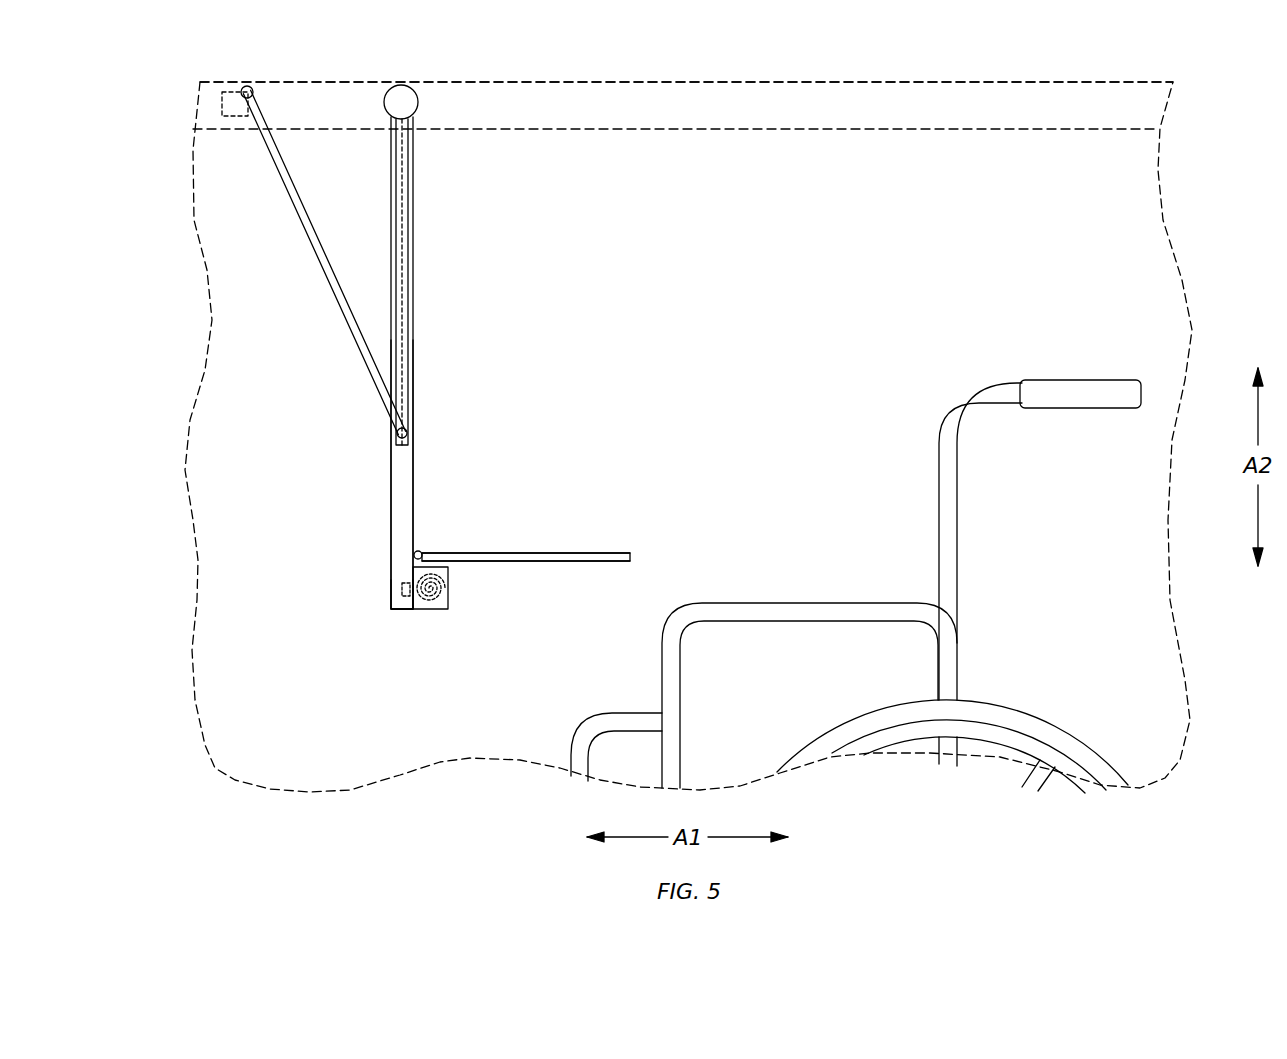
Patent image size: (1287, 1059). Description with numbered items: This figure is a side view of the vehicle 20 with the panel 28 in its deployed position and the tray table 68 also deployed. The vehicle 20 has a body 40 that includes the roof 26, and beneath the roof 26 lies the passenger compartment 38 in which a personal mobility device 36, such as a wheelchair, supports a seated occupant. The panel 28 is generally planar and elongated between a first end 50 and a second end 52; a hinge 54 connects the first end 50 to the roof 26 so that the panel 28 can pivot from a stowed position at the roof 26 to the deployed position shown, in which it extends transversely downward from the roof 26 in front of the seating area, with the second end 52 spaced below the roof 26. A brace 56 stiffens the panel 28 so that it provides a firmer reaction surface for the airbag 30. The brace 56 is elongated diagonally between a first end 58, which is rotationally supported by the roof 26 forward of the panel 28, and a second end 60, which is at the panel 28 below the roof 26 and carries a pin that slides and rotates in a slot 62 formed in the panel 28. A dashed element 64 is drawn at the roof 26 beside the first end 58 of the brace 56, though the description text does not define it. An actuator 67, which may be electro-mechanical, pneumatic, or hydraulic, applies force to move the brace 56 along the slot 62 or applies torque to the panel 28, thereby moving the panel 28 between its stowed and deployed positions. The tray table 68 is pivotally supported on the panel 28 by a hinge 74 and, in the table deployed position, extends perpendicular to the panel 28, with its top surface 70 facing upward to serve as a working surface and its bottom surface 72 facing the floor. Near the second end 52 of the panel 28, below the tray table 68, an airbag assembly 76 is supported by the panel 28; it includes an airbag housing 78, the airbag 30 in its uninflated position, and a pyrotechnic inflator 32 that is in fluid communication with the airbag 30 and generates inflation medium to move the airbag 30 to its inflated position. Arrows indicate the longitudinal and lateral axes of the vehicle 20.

The vehicle 20 is at (609, 81).
The roof 26 is at (774, 104).
The panel 28 is at (413, 340).
The airbag 30 is at (432, 610).
The pyrotechnic inflator 32 is at (401, 592).
The personal mobility device 36 is at (778, 602).
The passenger compartment 38 is at (870, 200).
The body 40 is at (310, 80).
The first end 50 is at (413, 148).
The second end 52 is at (393, 611).
The hinge 54 is at (400, 86).
The brace 56 is at (322, 276).
The first end 58 is at (246, 86).
The second end 60 is at (397, 436).
The slot 62 is at (397, 200).
The roof mount 64 is at (222, 98).
The actuator 67 is at (410, 262).
The tray table 68 is at (509, 563).
The top surface 70 is at (530, 553).
The bottom surface 72 is at (565, 563).
The hinge 74 is at (420, 550).
The airbag assembly 76 is at (352, 572).
The airbag housing 78 is at (443, 611).